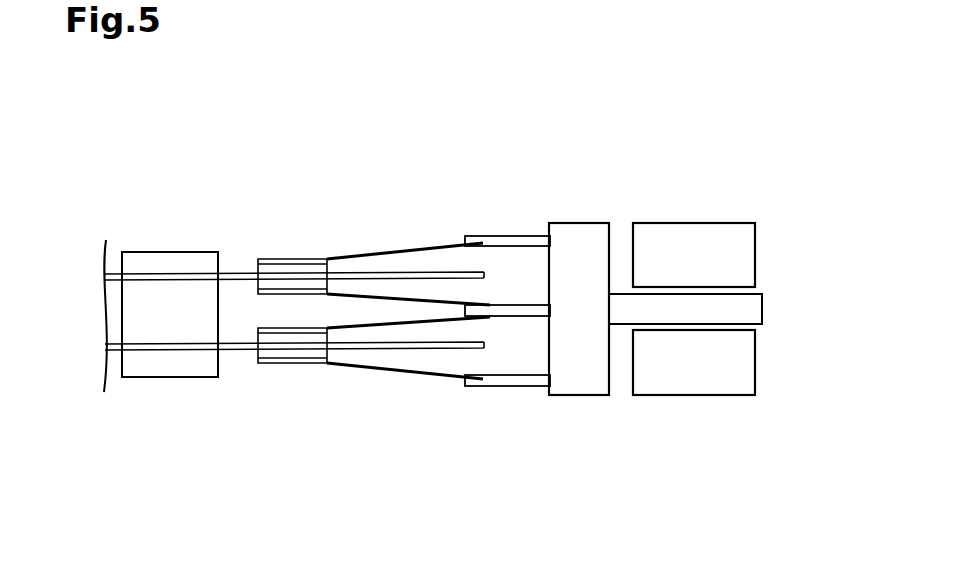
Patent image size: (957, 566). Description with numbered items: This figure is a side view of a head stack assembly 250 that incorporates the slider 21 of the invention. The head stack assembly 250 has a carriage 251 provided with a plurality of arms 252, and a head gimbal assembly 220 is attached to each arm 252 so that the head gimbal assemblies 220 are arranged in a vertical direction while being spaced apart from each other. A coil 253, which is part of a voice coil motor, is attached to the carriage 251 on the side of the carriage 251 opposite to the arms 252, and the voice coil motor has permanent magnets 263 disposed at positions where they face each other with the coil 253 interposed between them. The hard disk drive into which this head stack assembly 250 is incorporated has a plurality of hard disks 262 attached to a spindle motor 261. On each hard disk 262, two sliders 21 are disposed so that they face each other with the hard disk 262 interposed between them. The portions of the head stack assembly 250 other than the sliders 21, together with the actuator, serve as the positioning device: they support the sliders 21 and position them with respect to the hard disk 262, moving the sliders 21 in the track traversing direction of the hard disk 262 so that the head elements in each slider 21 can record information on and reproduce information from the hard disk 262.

The slider 21 is at (257, 268).
The head gimbal assembly 220 is at (384, 252).
The head stack assembly 250 is at (654, 308).
The carriage 251 is at (583, 387).
The arm 252 is at (480, 236).
The coil 253 is at (752, 310).
The spindle motor 261 is at (148, 258).
The hard disk 262 is at (233, 270).
The permanent magnet 263 is at (687, 222).